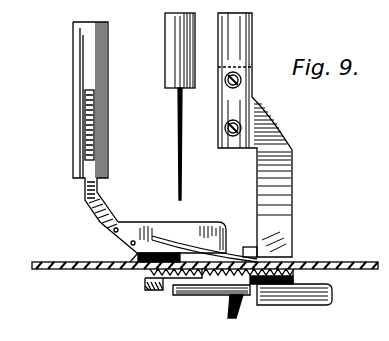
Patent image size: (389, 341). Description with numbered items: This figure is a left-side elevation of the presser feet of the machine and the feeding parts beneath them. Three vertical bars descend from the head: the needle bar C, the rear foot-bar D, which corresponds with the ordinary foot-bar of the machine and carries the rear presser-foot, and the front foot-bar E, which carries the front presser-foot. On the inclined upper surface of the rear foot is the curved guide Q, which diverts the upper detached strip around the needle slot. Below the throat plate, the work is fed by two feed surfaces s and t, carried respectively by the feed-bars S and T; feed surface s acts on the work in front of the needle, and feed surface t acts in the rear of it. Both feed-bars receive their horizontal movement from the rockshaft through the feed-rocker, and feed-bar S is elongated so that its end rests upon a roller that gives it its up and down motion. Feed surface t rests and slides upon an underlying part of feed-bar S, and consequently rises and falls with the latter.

The rear foot-bar D is at (73, 47).
The needle bar C is at (171, 27).
The front foot-bar E is at (223, 40).
The curved guide Q is at (185, 242).
The feed surface t is at (146, 281).
The feed-bar T is at (153, 290).
The feed surface s is at (293, 277).
The feed-bar S is at (323, 305).